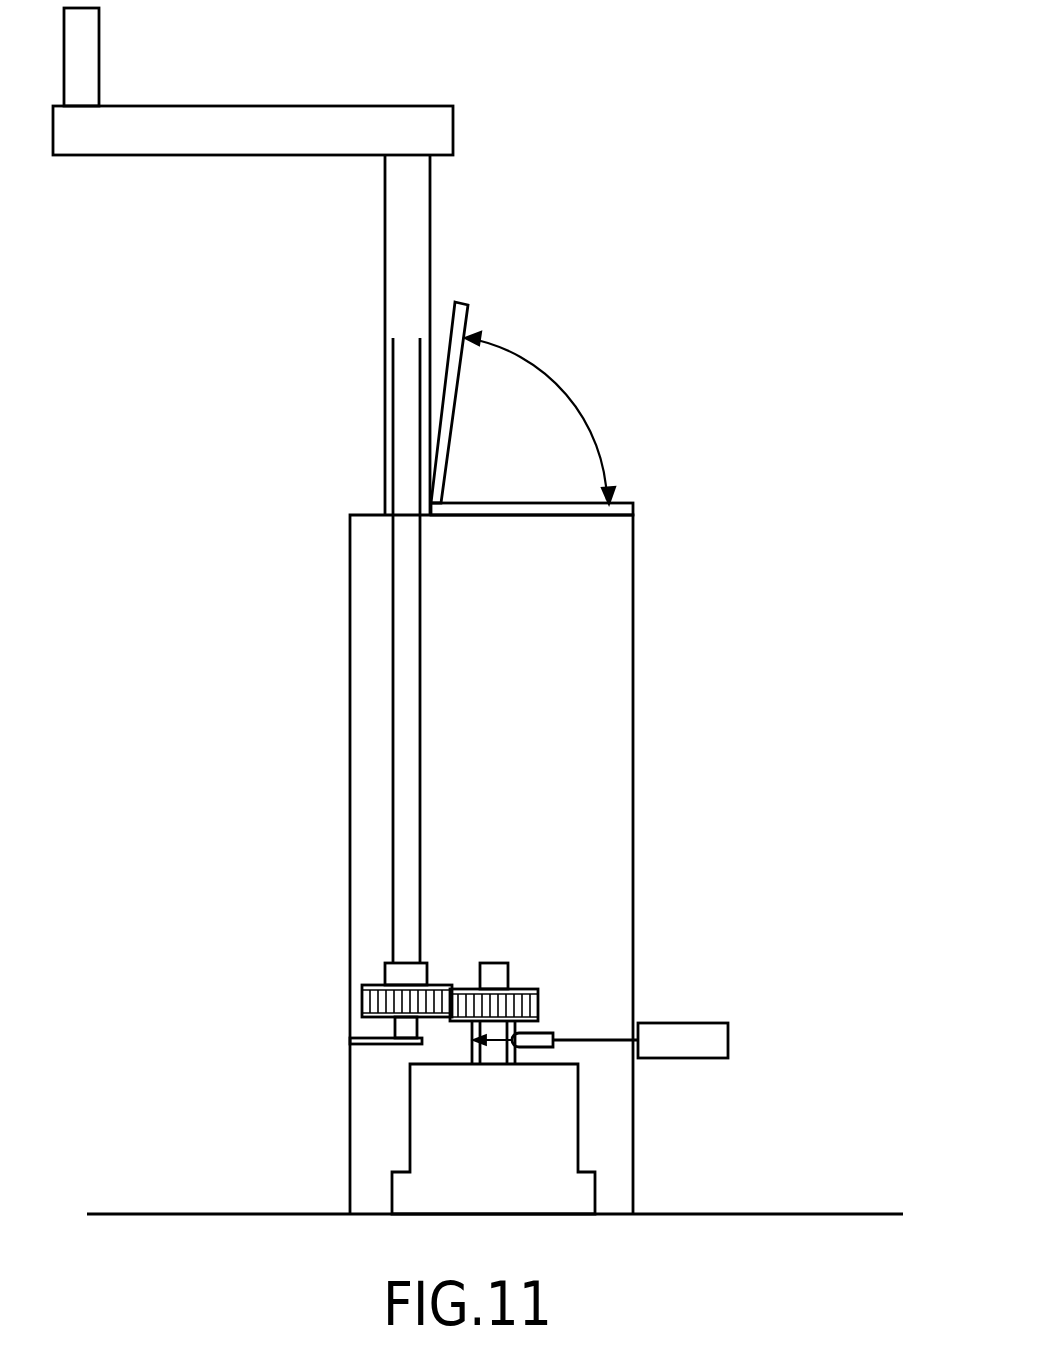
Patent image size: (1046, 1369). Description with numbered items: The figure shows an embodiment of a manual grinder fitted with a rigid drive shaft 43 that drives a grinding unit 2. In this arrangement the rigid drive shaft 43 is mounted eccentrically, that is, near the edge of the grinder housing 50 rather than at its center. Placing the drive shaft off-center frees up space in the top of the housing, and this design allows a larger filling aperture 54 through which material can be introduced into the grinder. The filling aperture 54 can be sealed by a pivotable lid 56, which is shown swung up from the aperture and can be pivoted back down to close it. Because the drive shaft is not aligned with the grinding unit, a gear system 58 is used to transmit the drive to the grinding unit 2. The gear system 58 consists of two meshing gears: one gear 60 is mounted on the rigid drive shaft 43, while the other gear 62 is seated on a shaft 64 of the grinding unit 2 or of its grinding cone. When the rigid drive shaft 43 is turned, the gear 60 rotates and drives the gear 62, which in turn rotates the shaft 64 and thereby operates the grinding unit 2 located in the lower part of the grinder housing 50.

The grinding unit 2 is at (430, 1128).
The rigid drive shaft 43 is at (403, 802).
The grinder housing 50 is at (633, 790).
The filling aperture 54 is at (584, 503).
The pivotable lid 56 is at (468, 319).
The gear system 58 is at (340, 1058).
The gear 60 is at (362, 1000).
The gear 62 is at (538, 1000).
The shaft 64 is at (515, 1047).